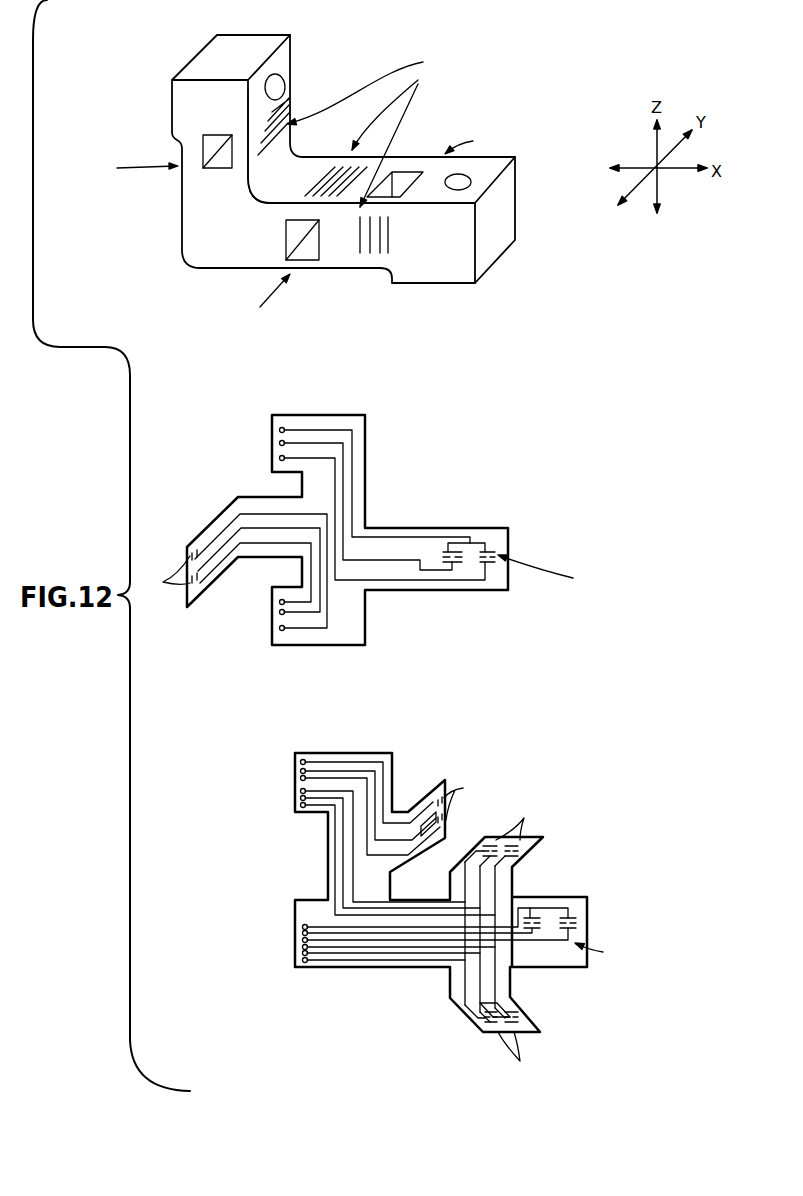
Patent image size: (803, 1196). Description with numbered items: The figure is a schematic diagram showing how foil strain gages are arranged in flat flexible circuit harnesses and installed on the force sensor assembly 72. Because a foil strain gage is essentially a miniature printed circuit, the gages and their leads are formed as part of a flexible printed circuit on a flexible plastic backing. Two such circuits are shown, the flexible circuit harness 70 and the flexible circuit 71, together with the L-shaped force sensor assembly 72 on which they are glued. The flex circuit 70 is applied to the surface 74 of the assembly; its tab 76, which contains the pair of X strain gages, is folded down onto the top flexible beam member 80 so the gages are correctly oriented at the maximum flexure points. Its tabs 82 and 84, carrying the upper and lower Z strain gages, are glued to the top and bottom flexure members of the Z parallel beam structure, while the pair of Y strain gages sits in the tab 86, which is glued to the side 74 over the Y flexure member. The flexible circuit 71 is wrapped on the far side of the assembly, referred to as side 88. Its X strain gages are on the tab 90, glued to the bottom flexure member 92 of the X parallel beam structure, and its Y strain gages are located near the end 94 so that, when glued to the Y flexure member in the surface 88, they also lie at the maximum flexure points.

The flexible circuit harness 70 is at (432, 977).
The flexible circuit 71 is at (404, 602).
The force sensor assembly 72 is at (170, 245).
The surface 74 is at (234, 255).
The tab 76 is at (441, 847).
The top flexible beam member 80 is at (245, 162).
The tab 82 is at (532, 850).
The tab 84 is at (529, 1013).
The tab 86 is at (588, 911).
The side 88 is at (418, 157).
The tab 90 is at (201, 596).
The bottom flexure member 92 is at (192, 147).
The end 94 is at (509, 542).